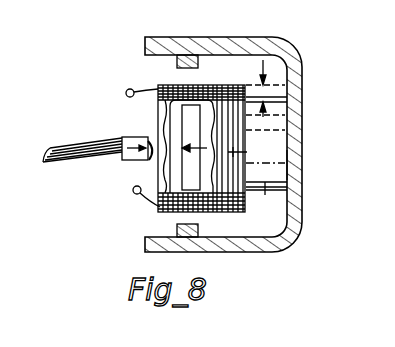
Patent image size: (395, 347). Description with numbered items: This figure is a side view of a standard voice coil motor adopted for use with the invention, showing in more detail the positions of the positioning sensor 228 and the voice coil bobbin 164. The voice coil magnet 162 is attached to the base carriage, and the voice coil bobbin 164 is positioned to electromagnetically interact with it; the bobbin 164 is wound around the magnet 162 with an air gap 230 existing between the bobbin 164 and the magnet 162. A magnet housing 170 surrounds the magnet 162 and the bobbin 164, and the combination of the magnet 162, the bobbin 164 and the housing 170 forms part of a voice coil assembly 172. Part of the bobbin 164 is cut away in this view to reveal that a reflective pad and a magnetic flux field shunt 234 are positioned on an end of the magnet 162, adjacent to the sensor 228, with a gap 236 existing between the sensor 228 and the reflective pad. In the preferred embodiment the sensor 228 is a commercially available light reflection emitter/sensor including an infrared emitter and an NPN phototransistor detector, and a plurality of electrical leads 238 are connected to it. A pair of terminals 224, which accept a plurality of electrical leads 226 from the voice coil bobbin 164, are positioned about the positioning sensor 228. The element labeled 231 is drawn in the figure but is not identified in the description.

The voice coil magnet 162 is at (262, 194).
The voice coil bobbin 164 is at (256, 146).
The magnet housing 170 is at (289, 165).
The voice coil assembly 172 is at (279, 41).
The terminals 224 is at (126, 93).
The electrical leads 226 is at (158, 86).
The positioning sensor 228 is at (122, 139).
The air gap 230 is at (265, 88).
The flexible circuit 231 is at (164, 127).
The magnetic flux field shunt 234 is at (190, 190).
The gap 236 is at (150, 161).
The electrical leads 238 is at (61, 158).